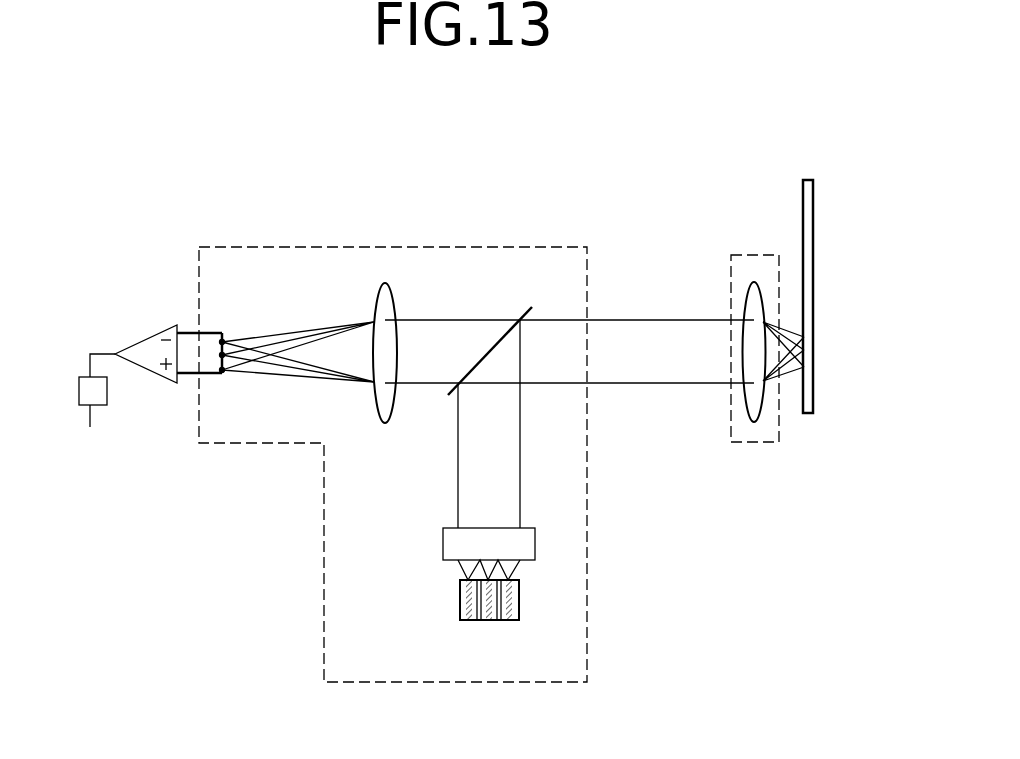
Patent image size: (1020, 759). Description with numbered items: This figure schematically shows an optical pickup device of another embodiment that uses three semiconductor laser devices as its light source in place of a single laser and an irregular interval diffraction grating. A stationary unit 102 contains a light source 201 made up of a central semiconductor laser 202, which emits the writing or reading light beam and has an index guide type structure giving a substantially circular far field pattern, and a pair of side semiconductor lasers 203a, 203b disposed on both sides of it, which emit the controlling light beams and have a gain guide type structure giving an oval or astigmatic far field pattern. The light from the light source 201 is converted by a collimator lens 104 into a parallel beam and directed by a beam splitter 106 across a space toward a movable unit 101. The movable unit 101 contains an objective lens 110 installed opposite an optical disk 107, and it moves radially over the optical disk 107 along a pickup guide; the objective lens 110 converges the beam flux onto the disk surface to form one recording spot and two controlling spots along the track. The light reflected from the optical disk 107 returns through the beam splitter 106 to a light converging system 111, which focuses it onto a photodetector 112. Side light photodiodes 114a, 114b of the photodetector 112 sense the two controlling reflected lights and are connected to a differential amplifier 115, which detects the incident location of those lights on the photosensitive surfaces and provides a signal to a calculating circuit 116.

The movable unit 101 is at (731, 261).
The stationary unit 102 is at (208, 245).
The collimator lens 104 is at (443, 543).
The beam splitter 106 is at (532, 307).
The optical disk 107 is at (810, 178).
The objective lens 110 is at (755, 283).
The light converging system 111 is at (388, 424).
The photodetector 112 is at (215, 323).
The side light photodiode 114a is at (223, 336).
The side light photodiode 114b is at (225, 375).
The differential amplifier 115 is at (152, 335).
The calculating circuit 116 is at (107, 395).
The light source 201 is at (526, 649).
The central semiconductor laser 202 is at (487, 622).
The side semiconductor laser 203a is at (512, 620).
The side semiconductor laser 203b is at (460, 618).